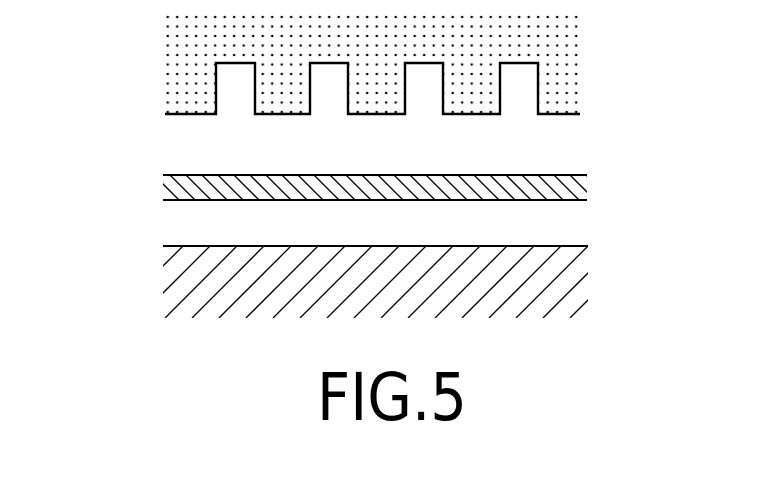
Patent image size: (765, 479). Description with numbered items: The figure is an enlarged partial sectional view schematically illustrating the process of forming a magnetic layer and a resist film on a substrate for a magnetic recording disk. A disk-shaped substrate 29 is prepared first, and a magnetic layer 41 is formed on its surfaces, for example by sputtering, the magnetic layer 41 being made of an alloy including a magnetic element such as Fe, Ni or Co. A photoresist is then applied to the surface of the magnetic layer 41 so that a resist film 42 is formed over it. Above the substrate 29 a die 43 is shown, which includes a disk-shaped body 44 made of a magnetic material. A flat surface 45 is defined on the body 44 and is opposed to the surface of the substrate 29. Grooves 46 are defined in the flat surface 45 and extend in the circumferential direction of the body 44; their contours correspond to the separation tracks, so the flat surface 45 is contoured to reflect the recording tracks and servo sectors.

The substrate 29 is at (563, 247).
The magnetic layer 41 is at (555, 202).
The resist film 42 is at (178, 175).
The die 43 is at (168, 72).
The body 44 is at (180, 97).
The flat surface 45 is at (577, 115).
The grooves 46 is at (350, 107).